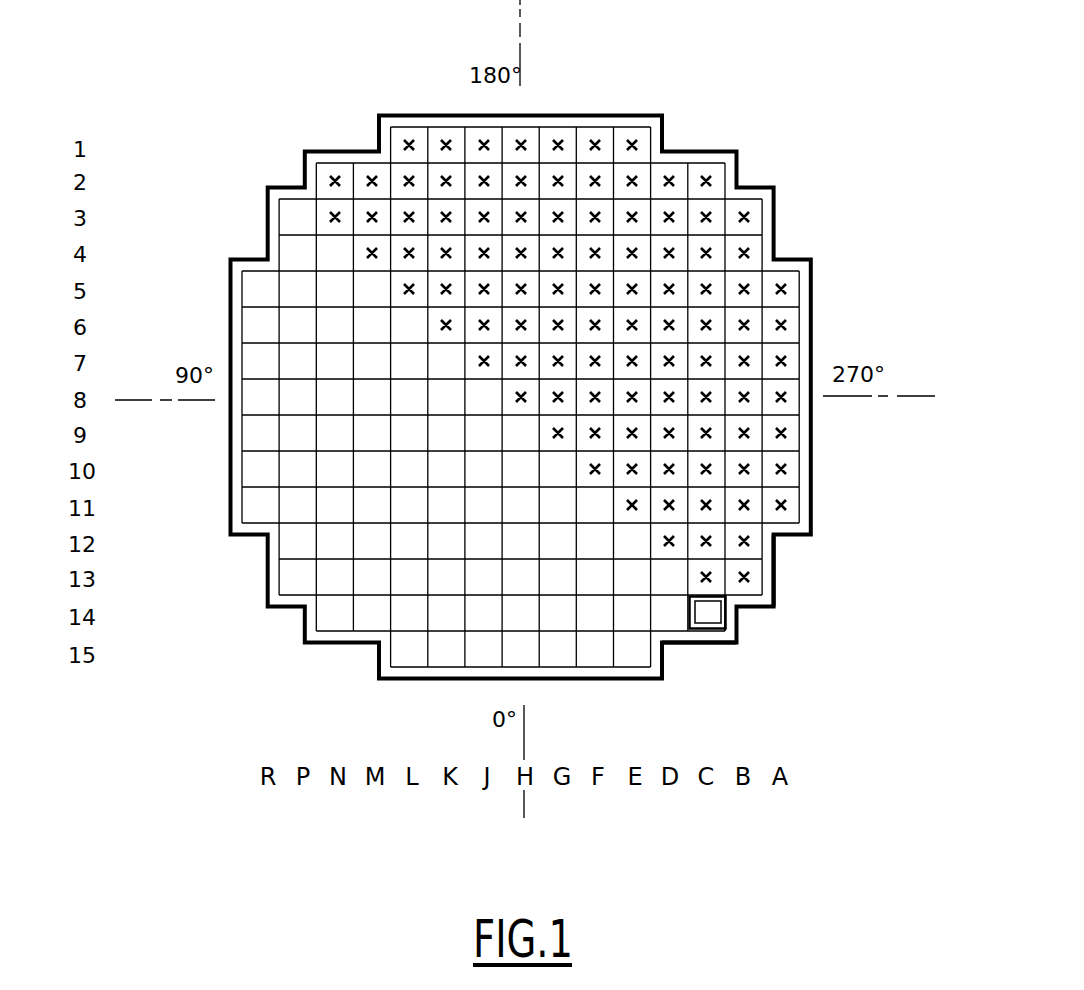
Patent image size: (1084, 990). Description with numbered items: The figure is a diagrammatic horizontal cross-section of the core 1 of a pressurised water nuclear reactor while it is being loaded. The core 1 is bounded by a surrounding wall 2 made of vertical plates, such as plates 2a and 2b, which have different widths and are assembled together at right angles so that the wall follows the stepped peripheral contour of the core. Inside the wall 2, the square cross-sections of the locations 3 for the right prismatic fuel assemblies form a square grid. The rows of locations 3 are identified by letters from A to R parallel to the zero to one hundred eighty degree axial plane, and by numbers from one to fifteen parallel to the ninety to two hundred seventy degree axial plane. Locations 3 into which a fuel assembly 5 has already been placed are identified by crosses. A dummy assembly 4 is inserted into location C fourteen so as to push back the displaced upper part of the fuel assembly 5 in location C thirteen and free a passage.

The core 1 is at (575, 401).
The surrounding wall 2 is at (806, 337).
The vertical plate 2a is at (739, 626).
The vertical plate 2b is at (772, 572).
The locations for the fuel assemblies 3 is at (372, 617).
The dummy assembly 4 is at (708, 608).
The fuel assembly 5 is at (708, 249).